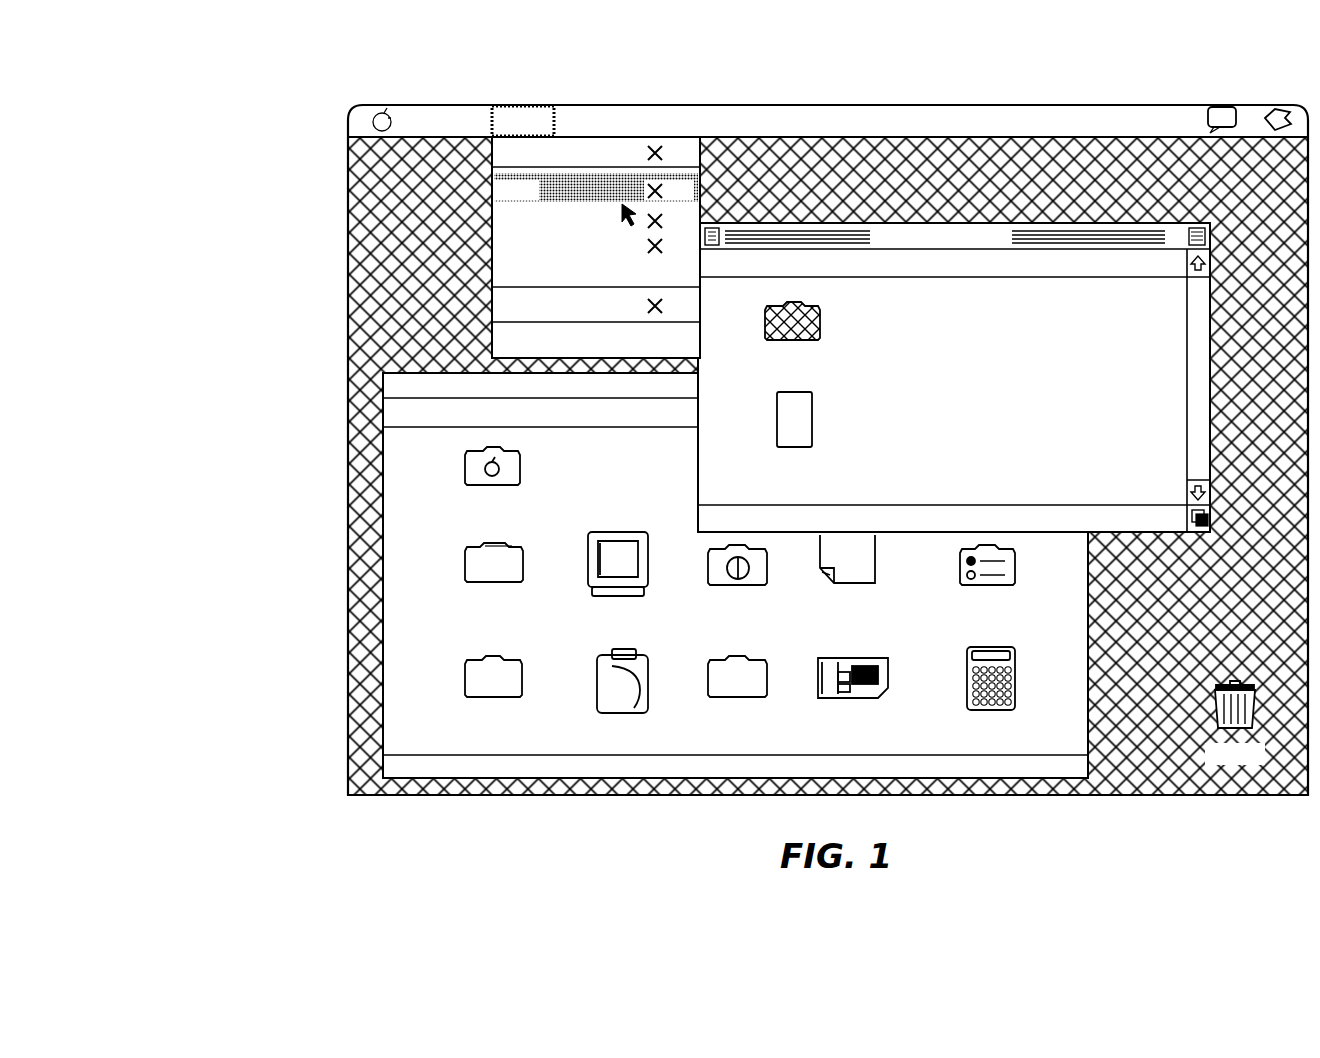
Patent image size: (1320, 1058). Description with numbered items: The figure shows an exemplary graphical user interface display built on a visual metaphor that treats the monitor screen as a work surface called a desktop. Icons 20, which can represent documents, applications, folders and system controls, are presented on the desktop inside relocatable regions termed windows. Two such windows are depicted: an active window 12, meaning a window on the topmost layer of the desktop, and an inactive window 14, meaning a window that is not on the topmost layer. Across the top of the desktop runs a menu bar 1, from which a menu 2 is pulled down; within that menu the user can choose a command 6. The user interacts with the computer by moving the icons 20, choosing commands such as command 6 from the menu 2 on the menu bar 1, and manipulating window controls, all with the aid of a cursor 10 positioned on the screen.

The menu bar 1 is at (348, 132).
The menu 2 is at (492, 167).
The command 6 is at (492, 195).
The cursor 10 is at (622, 212).
The active window 12 is at (490, 357).
The inactive window 14 is at (383, 480).
The icons 20 is at (765, 338).